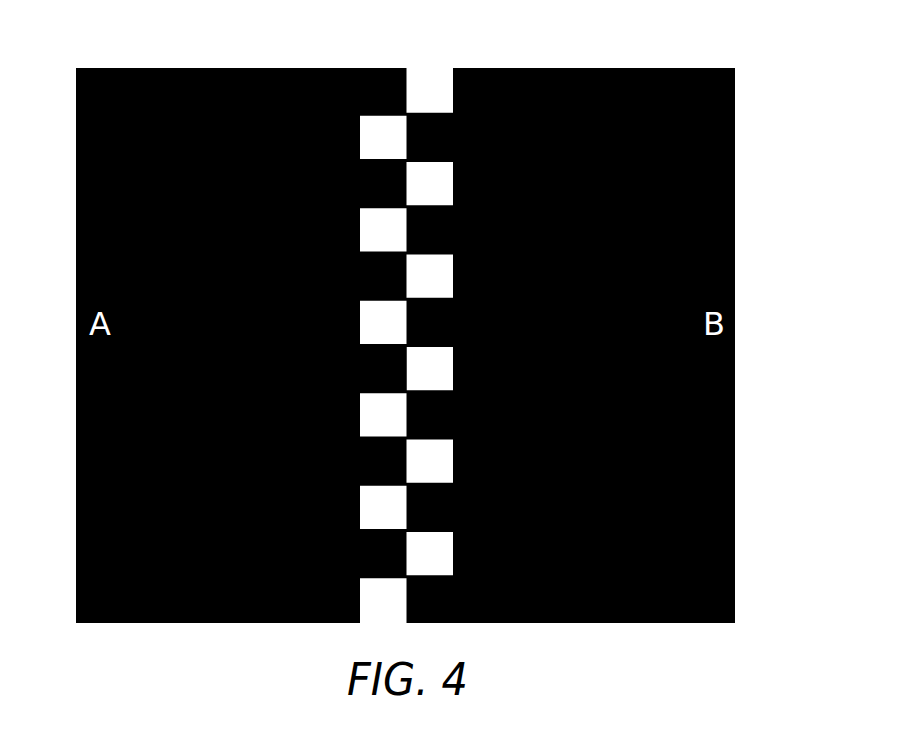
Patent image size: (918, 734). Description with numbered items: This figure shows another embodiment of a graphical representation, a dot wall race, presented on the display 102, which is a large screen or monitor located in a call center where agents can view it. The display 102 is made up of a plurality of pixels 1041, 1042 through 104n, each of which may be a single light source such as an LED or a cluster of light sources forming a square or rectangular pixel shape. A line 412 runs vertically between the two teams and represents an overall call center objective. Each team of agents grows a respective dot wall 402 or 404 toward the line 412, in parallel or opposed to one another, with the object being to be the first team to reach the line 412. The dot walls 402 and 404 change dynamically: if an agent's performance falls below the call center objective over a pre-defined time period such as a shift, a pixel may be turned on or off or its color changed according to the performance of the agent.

The display 102 is at (650, 67).
The line 412 is at (384, 82).
The dot wall 402 is at (190, 253).
The pixel 1041 is at (126, 285).
The pixel 1042 is at (126, 337).
The dot wall 404 is at (690, 253).
The pixel 104n is at (690, 365).